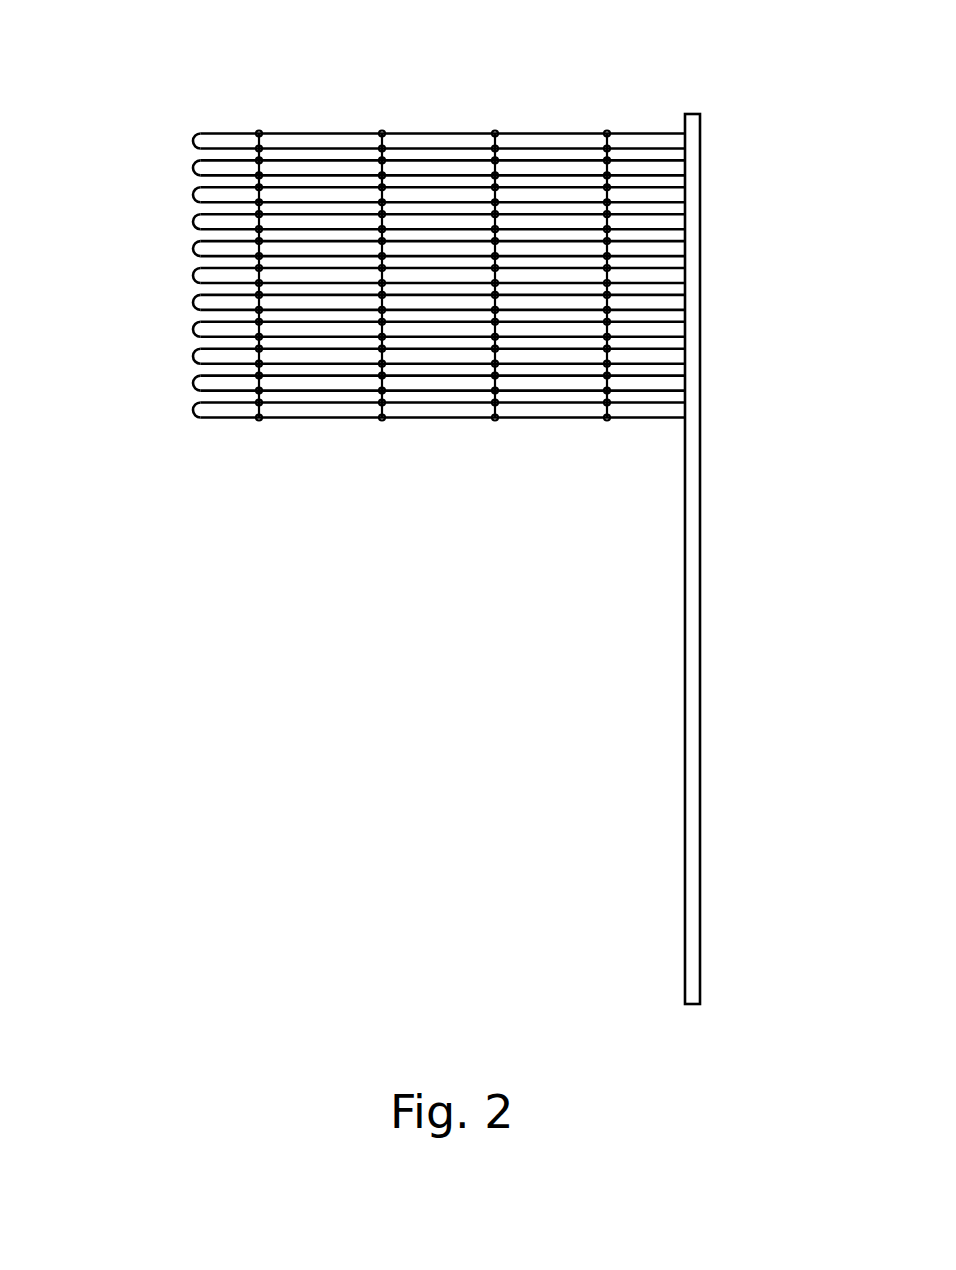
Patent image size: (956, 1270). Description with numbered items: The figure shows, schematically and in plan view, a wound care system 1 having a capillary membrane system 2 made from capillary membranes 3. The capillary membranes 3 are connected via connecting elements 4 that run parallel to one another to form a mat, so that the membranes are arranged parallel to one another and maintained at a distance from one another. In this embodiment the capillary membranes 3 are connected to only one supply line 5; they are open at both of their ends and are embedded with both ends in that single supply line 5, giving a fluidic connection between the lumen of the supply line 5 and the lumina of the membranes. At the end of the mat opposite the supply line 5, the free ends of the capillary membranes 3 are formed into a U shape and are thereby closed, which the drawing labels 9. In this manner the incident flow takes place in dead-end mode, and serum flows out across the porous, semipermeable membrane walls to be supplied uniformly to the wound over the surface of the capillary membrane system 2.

The wound care system 1 is at (647, 88).
The capillary membrane system 2 is at (564, 133).
The capillary membranes 3 is at (332, 188).
The connecting elements 4 is at (382, 419).
The supply line 5 is at (692, 473).
The tube bends 9 is at (193, 248).